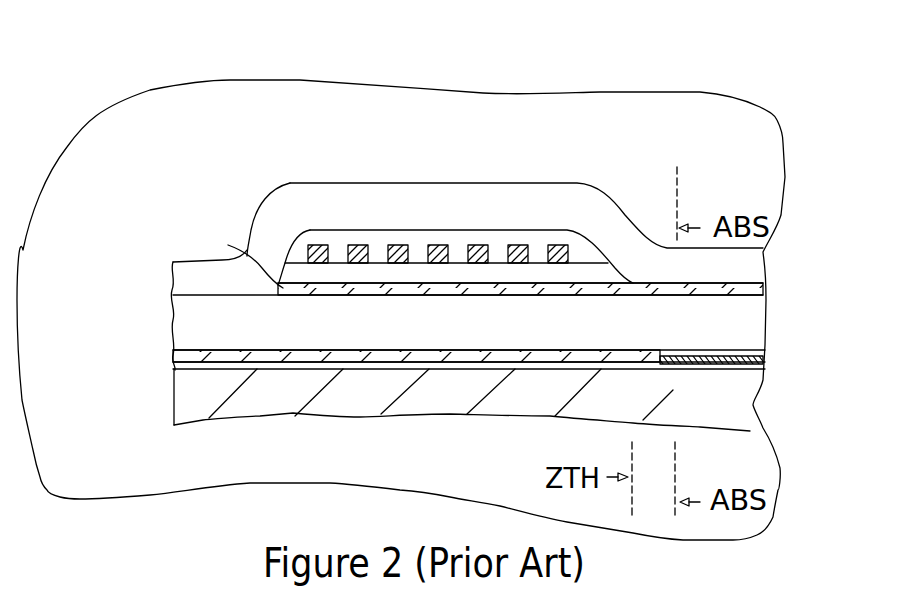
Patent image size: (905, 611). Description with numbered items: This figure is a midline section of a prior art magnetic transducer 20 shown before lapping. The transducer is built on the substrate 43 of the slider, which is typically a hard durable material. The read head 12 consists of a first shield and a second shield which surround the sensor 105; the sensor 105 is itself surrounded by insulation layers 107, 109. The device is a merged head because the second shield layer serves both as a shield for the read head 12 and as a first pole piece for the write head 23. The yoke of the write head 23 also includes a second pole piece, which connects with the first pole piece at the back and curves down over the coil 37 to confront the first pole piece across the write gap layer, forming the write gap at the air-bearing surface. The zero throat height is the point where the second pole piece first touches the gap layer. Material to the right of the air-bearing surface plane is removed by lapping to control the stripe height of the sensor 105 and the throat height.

The magnetic transducer 20 is at (236, 65).
The substrate 43 is at (430, 152).
The coil 37 is at (308, 247).
The write head 23 is at (785, 178).
The read head 12 is at (115, 293).
The insulation layer 109 is at (197, 353).
The insulation layer 107 is at (178, 367).
The sensor 105 is at (665, 365).